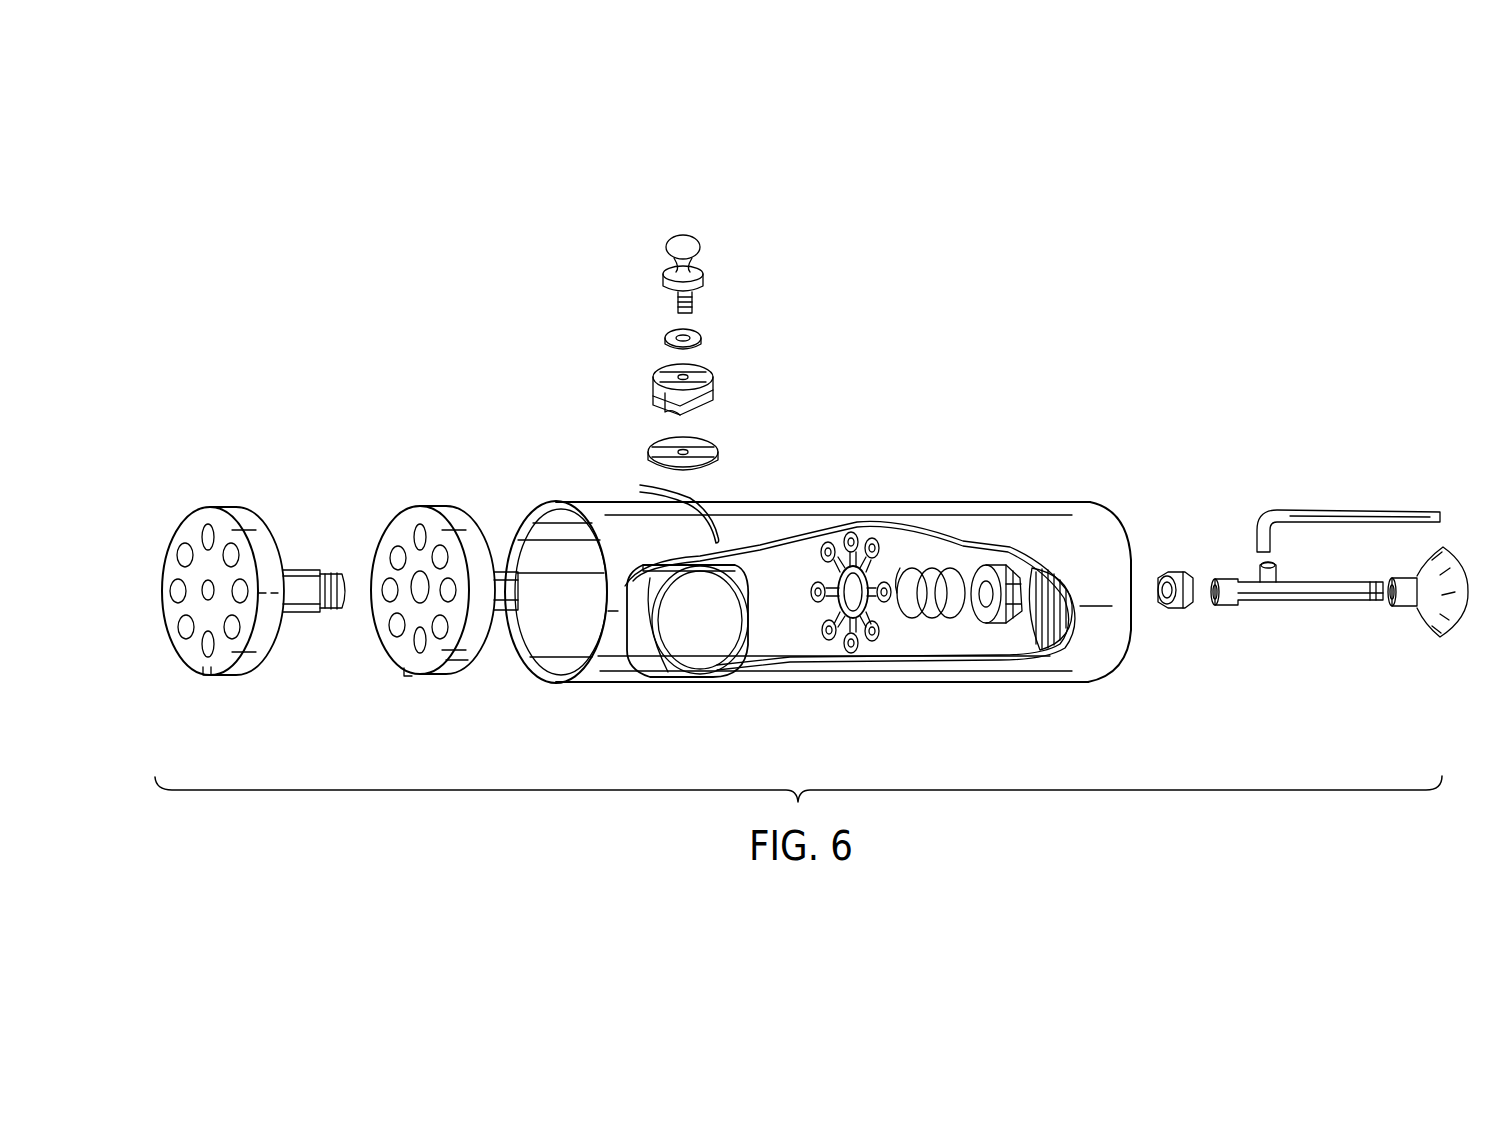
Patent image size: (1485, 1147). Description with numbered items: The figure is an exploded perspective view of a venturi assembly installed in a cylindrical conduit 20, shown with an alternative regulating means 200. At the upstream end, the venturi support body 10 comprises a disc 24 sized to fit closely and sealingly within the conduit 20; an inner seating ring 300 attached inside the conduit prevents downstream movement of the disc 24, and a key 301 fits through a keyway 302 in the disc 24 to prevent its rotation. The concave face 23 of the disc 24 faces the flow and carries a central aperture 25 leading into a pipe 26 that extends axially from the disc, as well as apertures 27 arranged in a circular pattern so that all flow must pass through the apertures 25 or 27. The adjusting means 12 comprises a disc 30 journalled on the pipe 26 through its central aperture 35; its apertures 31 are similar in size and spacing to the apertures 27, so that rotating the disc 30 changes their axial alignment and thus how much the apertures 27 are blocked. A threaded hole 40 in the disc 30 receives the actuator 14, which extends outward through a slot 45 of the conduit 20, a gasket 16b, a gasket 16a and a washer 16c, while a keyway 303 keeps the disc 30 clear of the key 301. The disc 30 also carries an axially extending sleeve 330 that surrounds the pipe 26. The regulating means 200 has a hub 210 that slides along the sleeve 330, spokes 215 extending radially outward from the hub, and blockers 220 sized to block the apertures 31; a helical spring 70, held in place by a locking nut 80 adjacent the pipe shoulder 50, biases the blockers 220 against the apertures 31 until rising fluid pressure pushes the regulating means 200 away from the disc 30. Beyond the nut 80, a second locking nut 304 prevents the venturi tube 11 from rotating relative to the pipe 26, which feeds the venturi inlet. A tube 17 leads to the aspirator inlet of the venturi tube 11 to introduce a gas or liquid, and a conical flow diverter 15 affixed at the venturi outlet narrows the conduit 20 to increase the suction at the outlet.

The venturi support body 10 is at (241, 598).
The venturi tube 11 is at (1328, 603).
The adjusting means 12 is at (427, 605).
The actuator 14 is at (700, 247).
The flow diverter 15 is at (1427, 625).
The gasket 16a is at (718, 452).
The gasket 16b is at (700, 340).
The washer 16c is at (713, 377).
The tube 17 is at (1300, 508).
The conduit 20 is at (1065, 500).
The face 23 is at (172, 566).
The disc 24 is at (246, 520).
The aperture 25 is at (207, 598).
The pipe 26 is at (294, 594).
The apertures 27 is at (207, 526).
The disc 30 is at (470, 650).
The apertures 31 is at (394, 560).
The central aperture 35 is at (420, 598).
The threaded hole 40 is at (446, 520).
The slot 45 is at (640, 488).
The pipe shoulder 50 is at (298, 580).
The helical spring 70 is at (925, 566).
The locking nut 80 is at (977, 562).
The regulating means 200 is at (878, 656).
The hub 210 is at (847, 650).
The spokes 215 is at (872, 600).
The blockers 220 is at (862, 645).
The inner seating ring 300 is at (712, 680).
The key 301 is at (652, 672).
The keyway 302 is at (207, 677).
The keyway 303 is at (406, 672).
The locking nut 304 is at (1172, 608).
The sleeve 330 is at (505, 570).